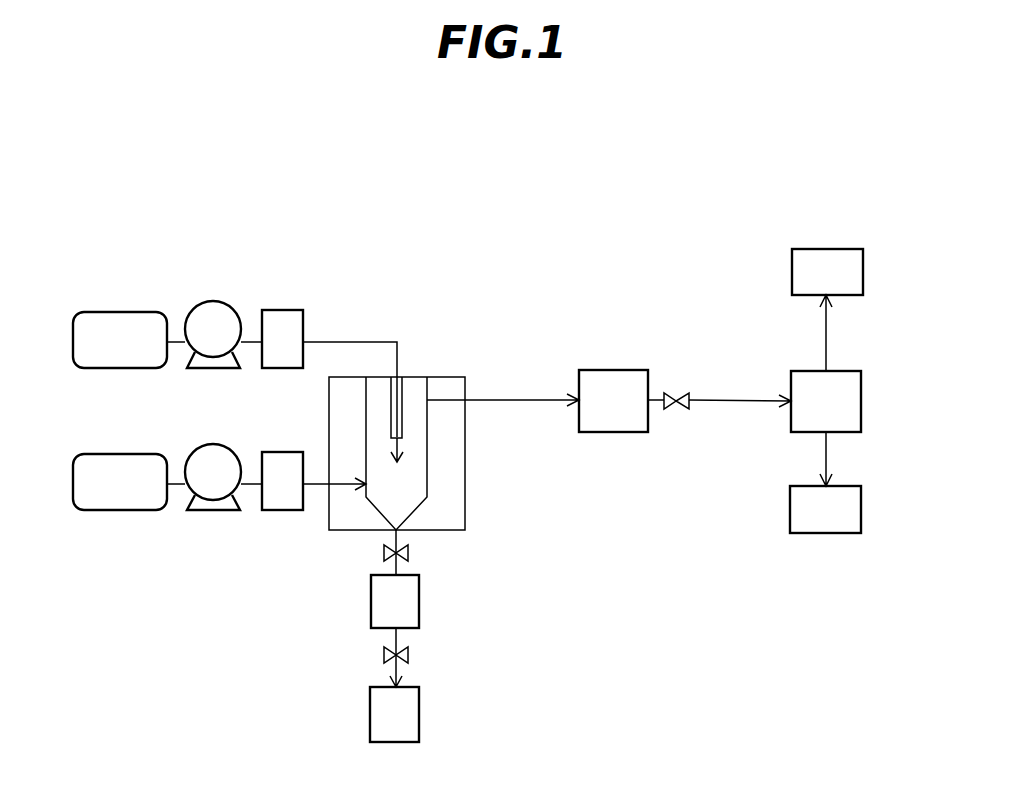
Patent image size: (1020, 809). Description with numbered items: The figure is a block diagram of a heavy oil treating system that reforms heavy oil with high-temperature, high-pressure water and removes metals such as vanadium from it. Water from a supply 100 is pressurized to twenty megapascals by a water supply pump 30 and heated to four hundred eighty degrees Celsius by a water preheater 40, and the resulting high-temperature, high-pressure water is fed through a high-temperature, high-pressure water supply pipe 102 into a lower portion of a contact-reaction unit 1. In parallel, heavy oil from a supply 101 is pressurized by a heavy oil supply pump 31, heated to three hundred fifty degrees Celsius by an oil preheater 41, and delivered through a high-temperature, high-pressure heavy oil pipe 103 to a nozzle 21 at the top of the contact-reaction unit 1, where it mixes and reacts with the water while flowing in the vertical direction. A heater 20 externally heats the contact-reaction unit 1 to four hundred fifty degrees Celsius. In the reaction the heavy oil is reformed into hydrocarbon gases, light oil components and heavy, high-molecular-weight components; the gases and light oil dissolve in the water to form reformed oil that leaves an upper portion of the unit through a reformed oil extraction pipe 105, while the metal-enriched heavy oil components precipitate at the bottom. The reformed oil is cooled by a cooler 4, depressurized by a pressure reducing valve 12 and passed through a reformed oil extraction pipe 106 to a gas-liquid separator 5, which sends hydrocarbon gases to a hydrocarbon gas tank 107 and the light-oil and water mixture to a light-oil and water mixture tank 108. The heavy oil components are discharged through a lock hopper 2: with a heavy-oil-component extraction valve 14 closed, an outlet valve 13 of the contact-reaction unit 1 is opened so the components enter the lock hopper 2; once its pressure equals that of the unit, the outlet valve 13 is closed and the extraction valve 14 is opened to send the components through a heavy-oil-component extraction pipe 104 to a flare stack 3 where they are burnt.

The contact-reaction unit 1 is at (410, 470).
The lock hopper 2 is at (419, 600).
The flare stack 3 is at (419, 715).
The cooler 4 is at (614, 370).
The gas-liquid separator 5 is at (861, 402).
The pressure reducing valve 12 is at (676, 393).
The outlet valve 13 is at (410, 553).
The heavy-oil-component extraction valve 14 is at (410, 655).
The heater 20 is at (465, 497).
The nozzle 21 is at (401, 390).
The water supply pump 30 is at (212, 510).
The heavy oil supply pump 31 is at (214, 301).
The water preheater 40 is at (282, 510).
The oil preheater 41 is at (283, 310).
The water supply 100 is at (117, 510).
The heavy oil supply 101 is at (119, 312).
The high-temperature, high-pressure water supply pipe 102 is at (315, 484).
The high-temperature, high-pressure heavy oil pipe 103 is at (362, 342).
The heavy-oil-component extraction pipe 104 is at (392, 536).
The reformed oil extraction pipe 105 is at (516, 400).
The reformed oil extraction pipe 106 is at (735, 400).
The hydrocarbon gas tank 107 is at (863, 272).
The light-oil and water mixture tank 108 is at (861, 510).